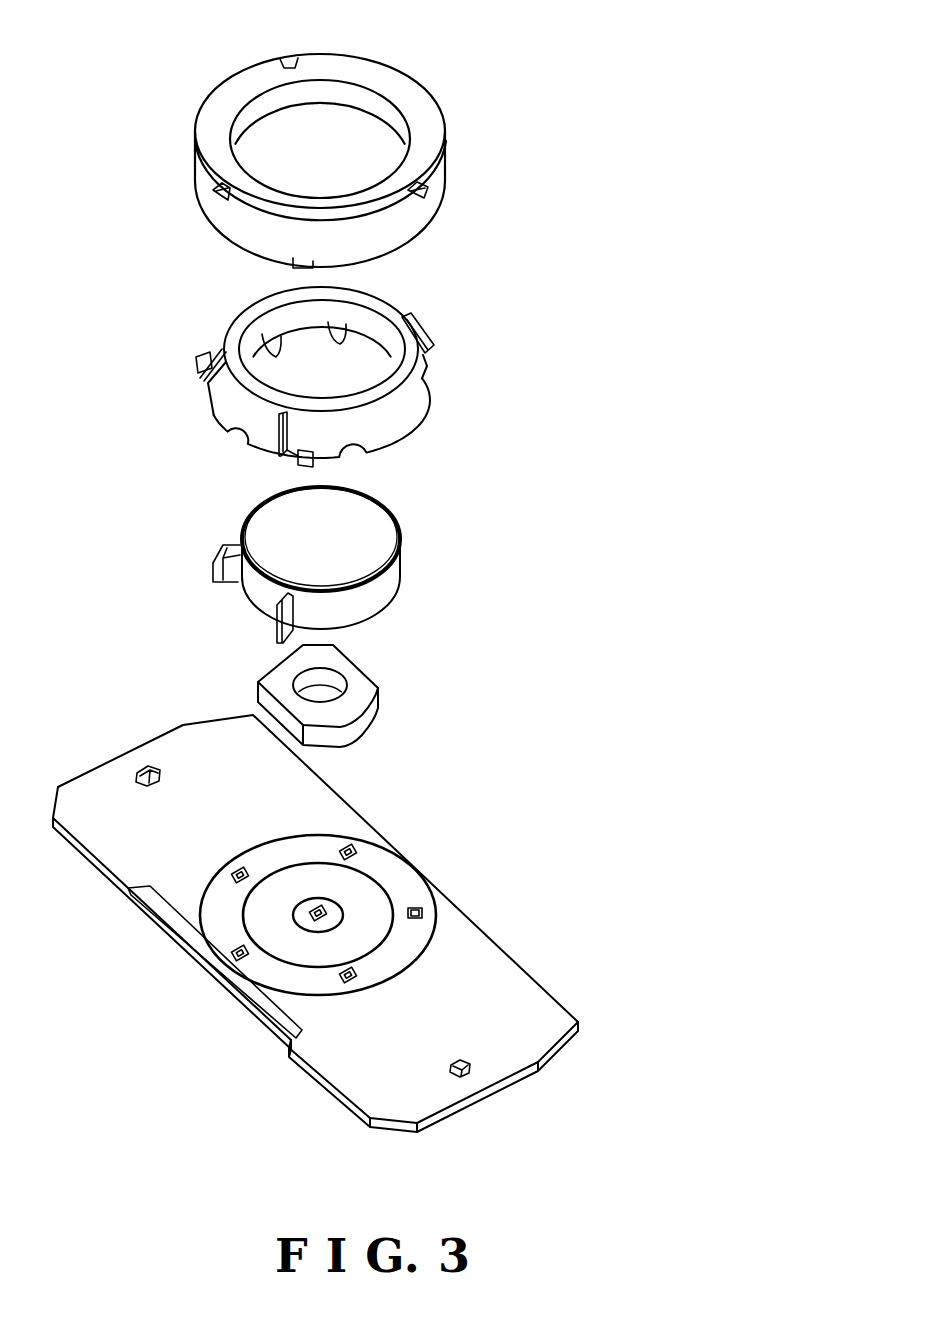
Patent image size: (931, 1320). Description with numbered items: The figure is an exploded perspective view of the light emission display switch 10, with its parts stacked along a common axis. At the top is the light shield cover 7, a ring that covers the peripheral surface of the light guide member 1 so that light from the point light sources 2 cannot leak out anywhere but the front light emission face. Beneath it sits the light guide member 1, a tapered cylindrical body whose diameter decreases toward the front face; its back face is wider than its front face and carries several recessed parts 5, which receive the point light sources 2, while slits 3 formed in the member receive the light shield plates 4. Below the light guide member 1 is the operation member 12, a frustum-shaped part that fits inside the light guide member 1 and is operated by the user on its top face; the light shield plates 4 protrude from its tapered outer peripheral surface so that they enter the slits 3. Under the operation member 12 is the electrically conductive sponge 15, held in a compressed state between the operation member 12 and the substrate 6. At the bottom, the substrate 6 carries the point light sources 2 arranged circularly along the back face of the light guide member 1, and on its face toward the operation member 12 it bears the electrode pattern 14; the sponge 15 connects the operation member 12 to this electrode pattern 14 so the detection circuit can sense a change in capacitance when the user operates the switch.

The light emission display switch 10 is at (562, 148).
The light shield cover 7 is at (427, 118).
The light guide member 1 is at (333, 379).
The recessed part 5 is at (277, 355).
The slit 3 is at (207, 377).
The operation member 12 is at (334, 567).
The light shield plate 4 is at (216, 552).
The electrically conductive sponge 15 is at (358, 695).
The substrate 6 is at (324, 923).
The point light source 2 is at (240, 868).
The electrode pattern 14 is at (302, 946).